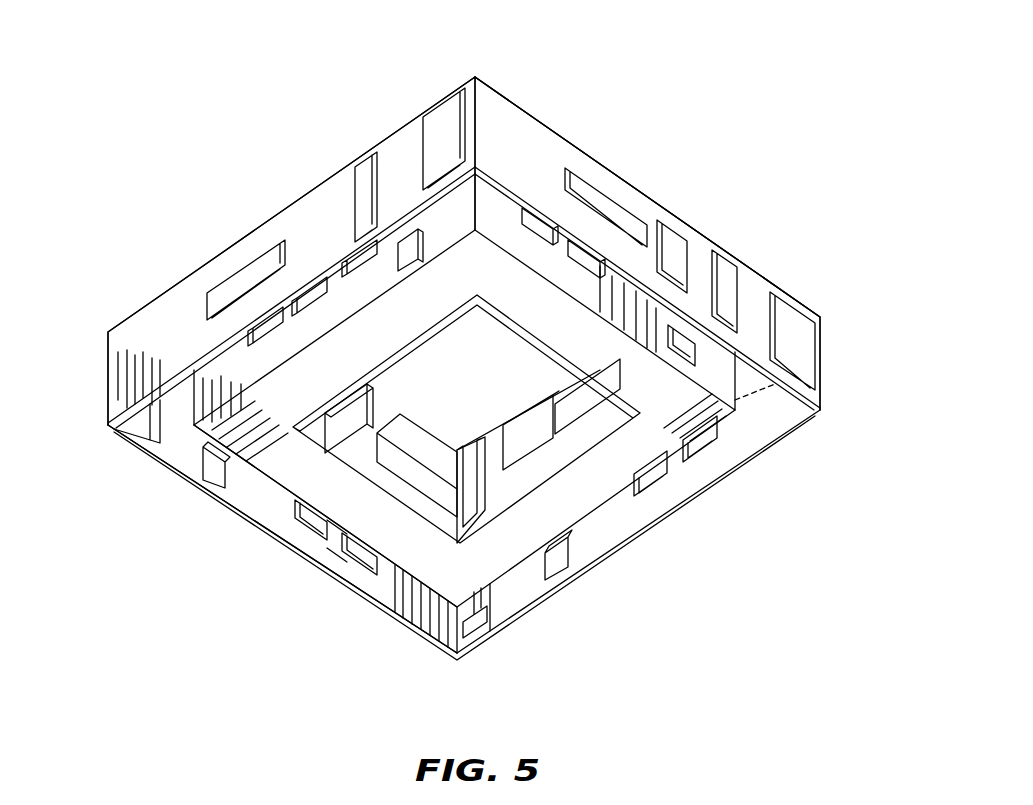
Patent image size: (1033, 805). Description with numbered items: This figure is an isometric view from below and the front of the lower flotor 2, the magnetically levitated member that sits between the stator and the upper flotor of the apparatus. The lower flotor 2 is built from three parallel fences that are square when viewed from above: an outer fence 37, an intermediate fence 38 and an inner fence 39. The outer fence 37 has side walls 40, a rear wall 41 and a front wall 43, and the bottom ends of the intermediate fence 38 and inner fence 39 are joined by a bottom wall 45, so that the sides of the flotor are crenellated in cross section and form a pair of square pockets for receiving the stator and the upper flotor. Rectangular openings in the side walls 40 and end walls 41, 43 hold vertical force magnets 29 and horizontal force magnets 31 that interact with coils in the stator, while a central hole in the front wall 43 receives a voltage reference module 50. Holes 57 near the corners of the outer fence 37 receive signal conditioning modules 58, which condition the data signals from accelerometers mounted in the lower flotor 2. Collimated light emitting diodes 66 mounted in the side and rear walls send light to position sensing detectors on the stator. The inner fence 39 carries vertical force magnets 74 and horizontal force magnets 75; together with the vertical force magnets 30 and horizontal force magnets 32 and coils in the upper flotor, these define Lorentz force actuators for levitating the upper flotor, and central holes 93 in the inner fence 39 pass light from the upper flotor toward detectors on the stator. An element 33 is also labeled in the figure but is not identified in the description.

The lower flotor 2 is at (697, 177).
The vertical force magnets 29 is at (363, 167).
The vertical force magnets 30 is at (405, 255).
The horizontal force magnets 31 is at (233, 287).
The horizontal force magnets 32 is at (272, 308).
The corner seam 33 is at (495, 205).
The outer fence 37 is at (822, 364).
The intermediate fence 38 is at (745, 393).
The inner fence 39 is at (387, 413).
The side walls 40 is at (153, 308).
The rear wall 41 is at (263, 517).
The front wall 43 is at (585, 153).
The bottom wall 45 is at (336, 357).
The voltage reference module 50 is at (682, 247).
The holes 57 is at (478, 97).
The signal conditioning modules 58 is at (447, 112).
The collimated light emitting diodes 66 is at (347, 253).
The vertical force magnets 74 is at (458, 602).
The horizontal force magnets 75 is at (580, 403).
The central holes 93 is at (527, 427).